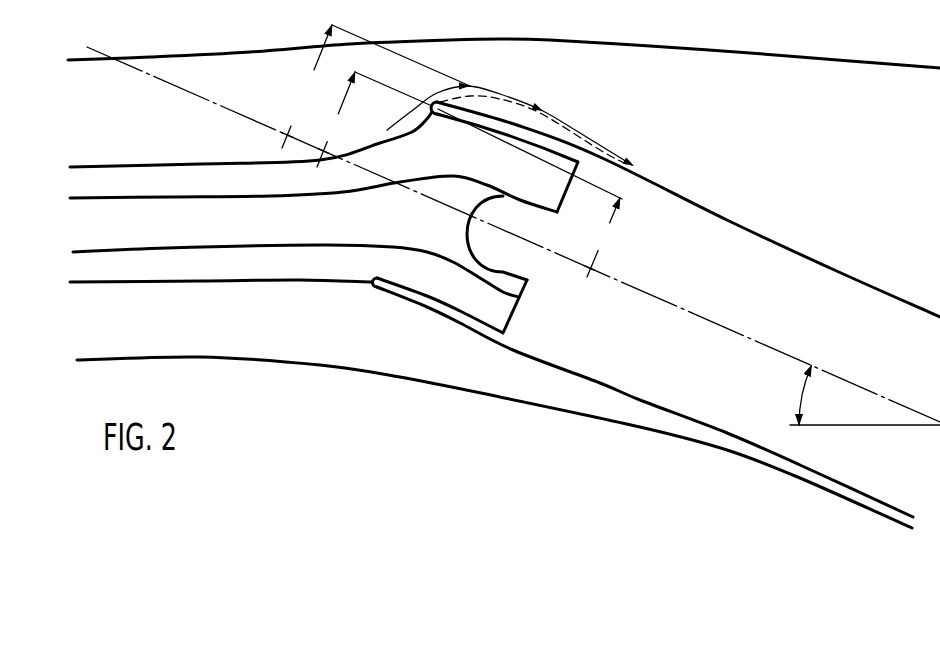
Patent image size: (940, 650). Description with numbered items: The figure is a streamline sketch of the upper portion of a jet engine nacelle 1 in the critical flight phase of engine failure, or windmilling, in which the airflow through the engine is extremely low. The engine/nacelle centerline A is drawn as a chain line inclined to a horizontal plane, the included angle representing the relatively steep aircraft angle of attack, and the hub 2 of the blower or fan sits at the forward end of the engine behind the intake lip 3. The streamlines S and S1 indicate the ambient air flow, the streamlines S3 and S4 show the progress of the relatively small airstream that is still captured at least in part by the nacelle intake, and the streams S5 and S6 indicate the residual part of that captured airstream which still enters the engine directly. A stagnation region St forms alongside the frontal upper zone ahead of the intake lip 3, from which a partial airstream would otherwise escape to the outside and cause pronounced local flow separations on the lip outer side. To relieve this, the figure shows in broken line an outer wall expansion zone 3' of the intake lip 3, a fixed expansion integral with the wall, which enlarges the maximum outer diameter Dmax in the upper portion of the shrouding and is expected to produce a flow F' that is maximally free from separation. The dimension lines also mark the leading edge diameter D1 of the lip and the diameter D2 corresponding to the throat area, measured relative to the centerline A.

The nacelle 1 is at (727, 218).
The hub 2 is at (507, 247).
The intake lip 3 is at (504, 157).
The outer wall expansion zone 3' is at (534, 111).
The streamline S is at (283, 51).
The streamline S1 is at (357, 370).
The streamline S3 is at (103, 165).
The streamline S4 is at (110, 282).
The stream S5 is at (175, 197).
The stream S6 is at (212, 245).
The engine/nacelle centerline A is at (650, 292).
The flow F' is at (510, 109).
The maximum outer diameter Dmax is at (376, 86).
The leading edge diameter D1 is at (374, 119).
The throat diameter D2 is at (530, 193).
The stagnation region St is at (373, 146).